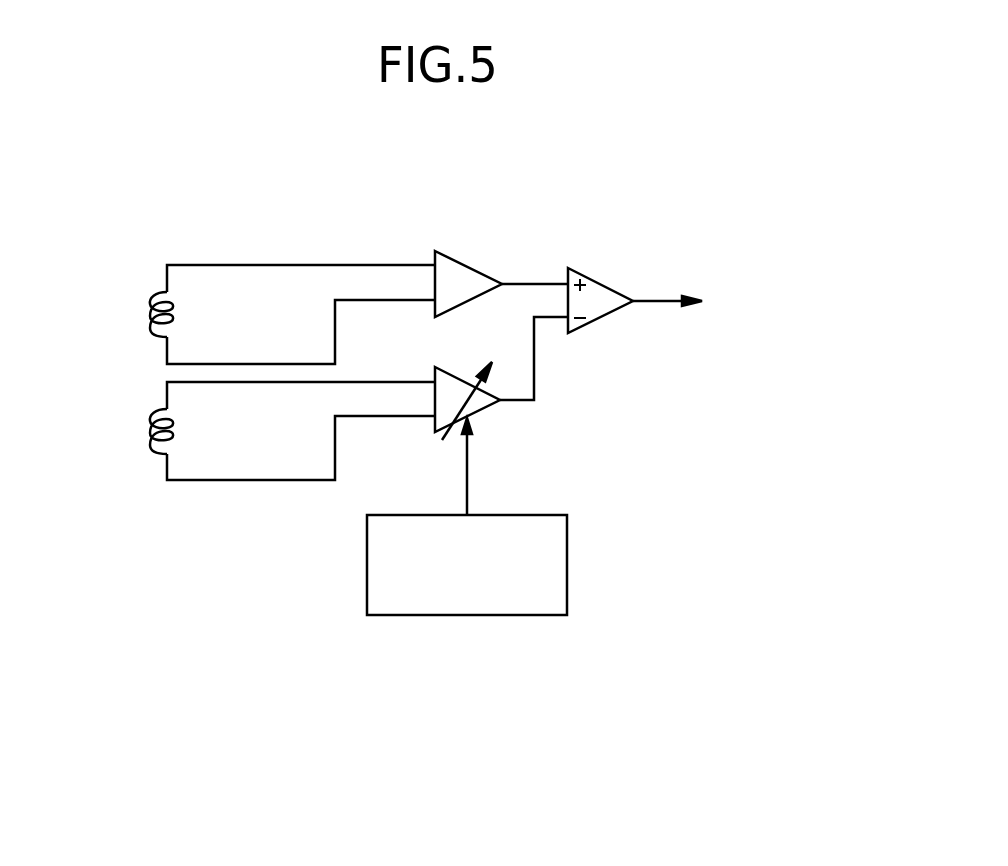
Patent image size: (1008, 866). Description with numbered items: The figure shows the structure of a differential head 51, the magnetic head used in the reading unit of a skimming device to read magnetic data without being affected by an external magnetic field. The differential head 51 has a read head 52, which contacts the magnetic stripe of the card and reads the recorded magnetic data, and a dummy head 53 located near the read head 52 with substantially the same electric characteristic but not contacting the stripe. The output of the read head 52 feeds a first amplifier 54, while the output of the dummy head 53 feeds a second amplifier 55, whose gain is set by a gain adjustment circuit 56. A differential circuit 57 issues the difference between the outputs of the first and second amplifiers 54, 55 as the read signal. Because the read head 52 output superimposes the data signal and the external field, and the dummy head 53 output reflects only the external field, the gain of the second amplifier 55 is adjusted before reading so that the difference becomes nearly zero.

The differential head 51 is at (597, 172).
The read head 52 is at (146, 316).
The dummy head 53 is at (146, 433).
The first amplifier 54 is at (468, 265).
The second amplifier 55 is at (483, 412).
The gain adjustment circuit 56 is at (568, 564).
The differential circuit 57 is at (598, 280).